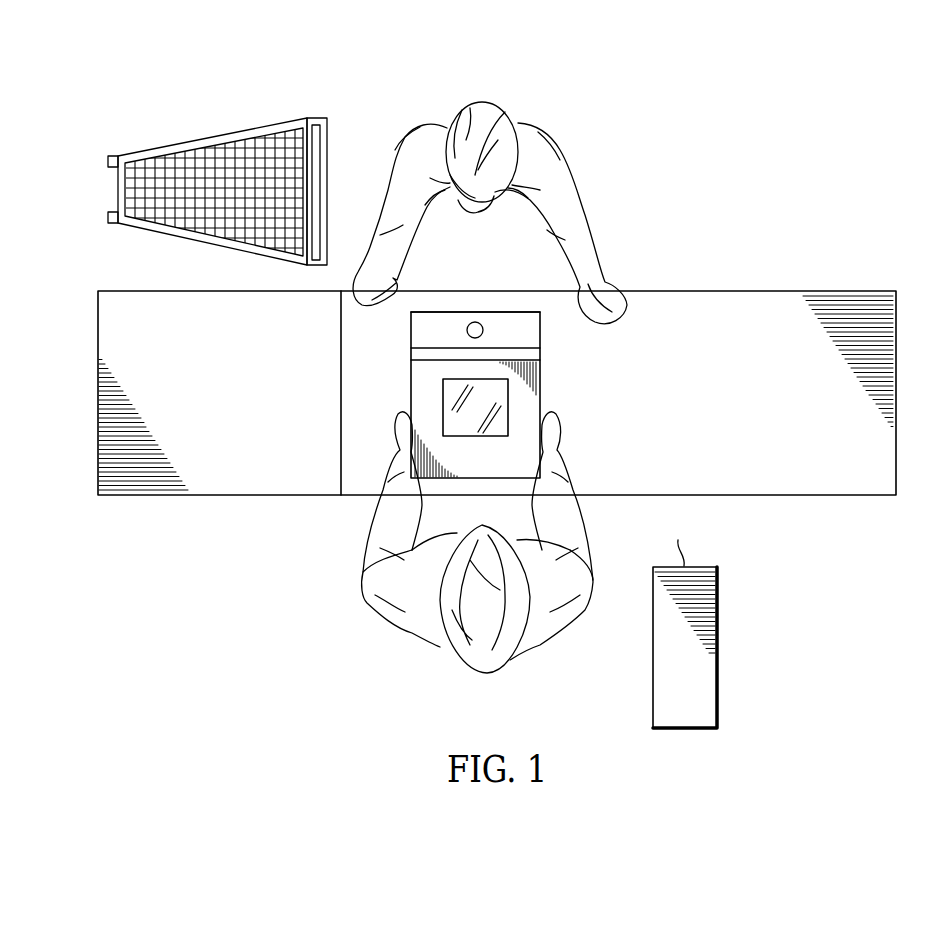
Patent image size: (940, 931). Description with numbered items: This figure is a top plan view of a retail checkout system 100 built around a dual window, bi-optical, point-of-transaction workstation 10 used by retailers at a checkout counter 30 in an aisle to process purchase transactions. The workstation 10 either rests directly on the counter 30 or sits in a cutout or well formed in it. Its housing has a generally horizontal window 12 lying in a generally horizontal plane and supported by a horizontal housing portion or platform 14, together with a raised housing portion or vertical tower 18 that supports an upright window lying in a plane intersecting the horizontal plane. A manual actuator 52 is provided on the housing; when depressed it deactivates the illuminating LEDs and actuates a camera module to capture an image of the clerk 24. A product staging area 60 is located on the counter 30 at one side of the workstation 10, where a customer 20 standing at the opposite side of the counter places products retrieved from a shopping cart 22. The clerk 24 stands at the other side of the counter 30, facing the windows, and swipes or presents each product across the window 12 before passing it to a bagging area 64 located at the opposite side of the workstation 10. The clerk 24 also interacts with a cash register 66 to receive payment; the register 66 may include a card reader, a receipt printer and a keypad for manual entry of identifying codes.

The retail checkout system 100 is at (652, 90).
The bi-optical point-of-transaction workstation 10 is at (588, 395).
The generally horizontal window 12 is at (487, 427).
The horizontal housing portion or platform 14 is at (525, 422).
The raised housing portion or vertical tower 18 is at (472, 312).
The customer 20 is at (535, 142).
The shopping cart 22 is at (213, 137).
The clerk 24 is at (425, 633).
The checkout counter 30 is at (865, 303).
The manual actuator 52 is at (467, 331).
The product staging area 60 is at (688, 313).
The bagging area 64 is at (123, 477).
The cash register 66 is at (715, 648).